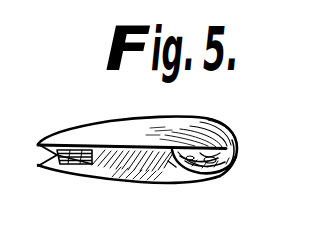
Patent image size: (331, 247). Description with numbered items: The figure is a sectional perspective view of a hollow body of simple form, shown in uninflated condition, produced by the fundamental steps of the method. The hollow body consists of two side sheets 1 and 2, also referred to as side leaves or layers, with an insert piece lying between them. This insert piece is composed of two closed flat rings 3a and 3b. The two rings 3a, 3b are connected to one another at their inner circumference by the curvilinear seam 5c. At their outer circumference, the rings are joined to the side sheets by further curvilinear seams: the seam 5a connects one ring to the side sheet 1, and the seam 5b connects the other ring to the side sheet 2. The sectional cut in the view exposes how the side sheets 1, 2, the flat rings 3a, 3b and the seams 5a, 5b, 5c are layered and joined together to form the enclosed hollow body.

The side sheet 1 is at (122, 175).
The side sheet 2 is at (152, 133).
The closed flat ring 3a is at (192, 168).
The closed flat ring 3b is at (236, 140).
The curvilinear seam 5a is at (233, 164).
The curvilinear seam 5b is at (218, 123).
The curvilinear seam 5c is at (168, 161).